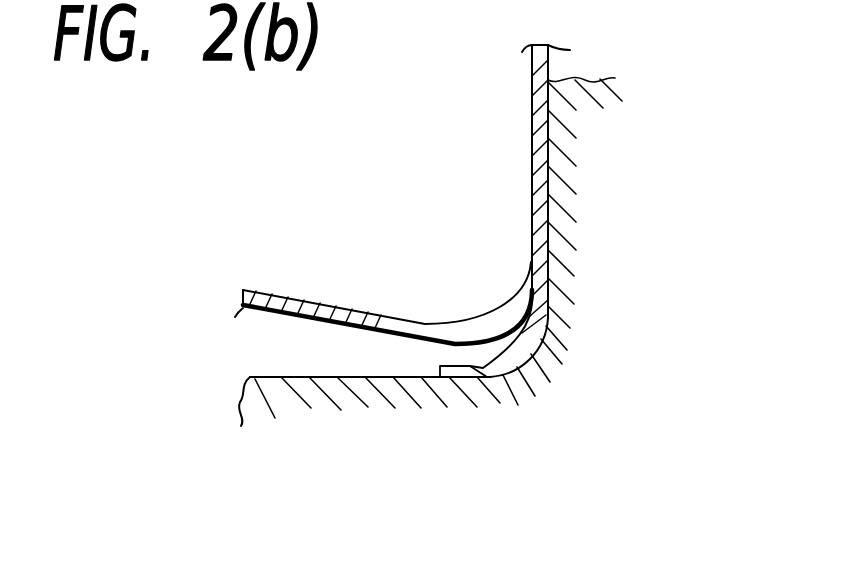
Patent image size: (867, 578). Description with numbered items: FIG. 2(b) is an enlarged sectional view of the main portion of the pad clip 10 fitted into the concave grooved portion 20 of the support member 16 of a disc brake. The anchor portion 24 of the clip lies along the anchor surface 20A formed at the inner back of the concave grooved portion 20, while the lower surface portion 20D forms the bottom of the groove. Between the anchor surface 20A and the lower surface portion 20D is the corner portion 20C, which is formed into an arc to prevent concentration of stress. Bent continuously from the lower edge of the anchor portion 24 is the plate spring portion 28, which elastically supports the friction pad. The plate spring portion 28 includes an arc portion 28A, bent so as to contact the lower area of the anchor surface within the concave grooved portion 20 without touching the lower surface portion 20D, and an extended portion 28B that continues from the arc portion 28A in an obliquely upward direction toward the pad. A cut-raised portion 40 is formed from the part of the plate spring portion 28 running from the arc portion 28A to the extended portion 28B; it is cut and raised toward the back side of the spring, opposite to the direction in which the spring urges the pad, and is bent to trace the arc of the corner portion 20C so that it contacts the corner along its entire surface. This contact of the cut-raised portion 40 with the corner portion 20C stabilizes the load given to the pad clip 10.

The pad clip 10 is at (348, 236).
The support member 16 is at (600, 175).
The concave grooved portion 20 is at (409, 278).
The anchor surface 20A is at (553, 253).
The corner portion 20C is at (558, 351).
The lower surface portion 20D is at (365, 388).
The anchor portion 24 is at (533, 92).
The plate spring portion 28 is at (383, 236).
The arc portion 28A is at (387, 277).
The extended portion 28B is at (288, 290).
The cut-raised portion 40 is at (493, 377).